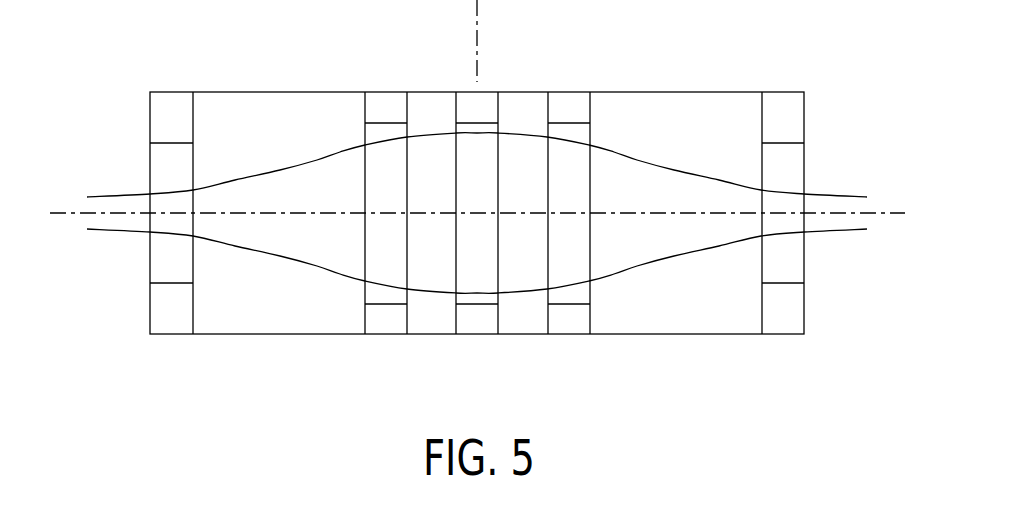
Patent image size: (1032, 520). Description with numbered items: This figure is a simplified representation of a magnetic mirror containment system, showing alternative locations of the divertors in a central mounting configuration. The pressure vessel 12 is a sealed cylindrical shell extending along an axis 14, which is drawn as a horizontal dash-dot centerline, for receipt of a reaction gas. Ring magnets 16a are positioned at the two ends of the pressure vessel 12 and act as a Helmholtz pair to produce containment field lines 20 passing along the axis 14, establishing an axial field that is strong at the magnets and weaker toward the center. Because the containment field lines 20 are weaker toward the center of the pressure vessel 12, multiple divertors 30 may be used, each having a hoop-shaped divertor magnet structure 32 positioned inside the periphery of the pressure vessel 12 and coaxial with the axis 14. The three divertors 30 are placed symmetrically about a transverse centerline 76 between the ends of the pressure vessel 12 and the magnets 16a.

The pressure vessel 12 is at (668, 92).
The axis 14 is at (76, 214).
The first ring magnet 16a is at (172, 336).
The containment field lines 20 is at (264, 174).
The permanent magnet divertor 30 is at (379, 342).
The divertor magnet structure 32 is at (561, 86).
The transverse axis 76 is at (477, 35).